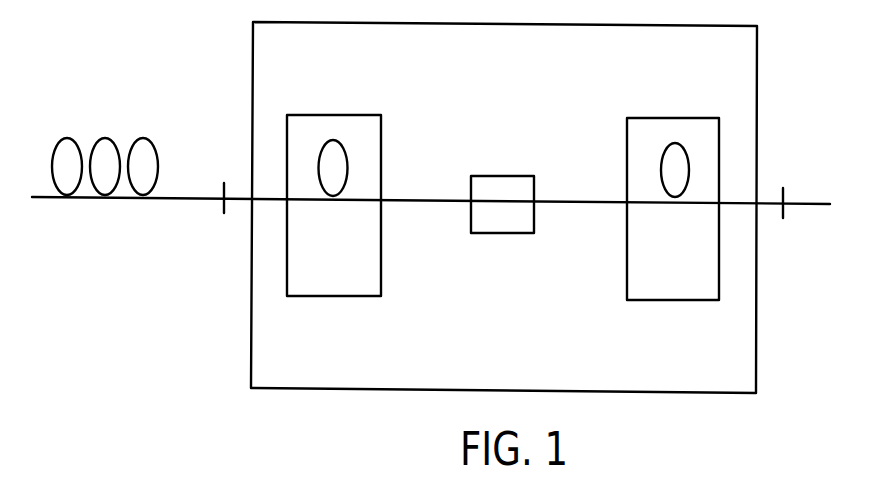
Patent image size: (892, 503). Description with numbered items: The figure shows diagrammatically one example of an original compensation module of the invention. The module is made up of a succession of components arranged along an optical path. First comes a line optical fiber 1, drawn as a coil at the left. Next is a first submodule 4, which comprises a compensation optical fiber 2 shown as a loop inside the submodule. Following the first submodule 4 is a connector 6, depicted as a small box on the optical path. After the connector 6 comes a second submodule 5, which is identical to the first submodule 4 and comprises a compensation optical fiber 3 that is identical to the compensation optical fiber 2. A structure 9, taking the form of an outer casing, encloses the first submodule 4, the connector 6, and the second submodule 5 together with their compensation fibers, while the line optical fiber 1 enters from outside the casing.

The line optical fiber 1 is at (107, 137).
The compensation optical fiber 2 is at (333, 142).
The compensation optical fiber 3 is at (674, 145).
The first submodule 4 is at (342, 296).
The second submodule 5 is at (673, 285).
The connector 6 is at (502, 233).
The structure 9 is at (760, 51).